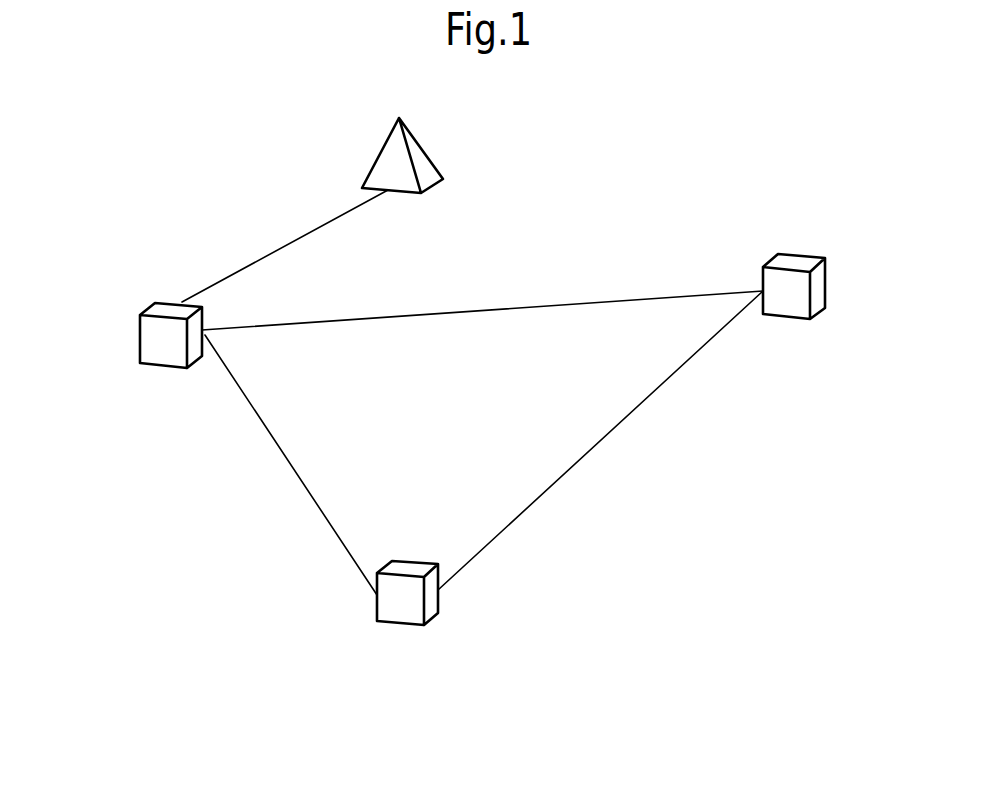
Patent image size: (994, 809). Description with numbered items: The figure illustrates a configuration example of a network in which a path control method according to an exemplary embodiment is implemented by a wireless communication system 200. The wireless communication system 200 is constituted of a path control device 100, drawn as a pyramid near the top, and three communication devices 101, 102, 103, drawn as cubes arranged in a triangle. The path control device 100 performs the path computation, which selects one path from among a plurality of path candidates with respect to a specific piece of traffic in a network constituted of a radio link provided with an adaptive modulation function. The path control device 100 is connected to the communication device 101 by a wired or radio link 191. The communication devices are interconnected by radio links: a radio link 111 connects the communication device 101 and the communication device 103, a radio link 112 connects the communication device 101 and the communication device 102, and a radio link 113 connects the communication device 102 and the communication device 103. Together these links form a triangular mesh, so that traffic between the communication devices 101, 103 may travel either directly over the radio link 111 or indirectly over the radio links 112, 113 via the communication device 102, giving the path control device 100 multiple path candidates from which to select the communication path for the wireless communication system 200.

The path control device 100 is at (425, 150).
The communication device 101 is at (140, 337).
The communication device 102 is at (400, 625).
The communication device 103 is at (825, 287).
The radio link 111 is at (432, 315).
The radio link 112 is at (282, 457).
The radio link 113 is at (590, 457).
The wired or radio link 191 is at (325, 228).
The wireless communication system 200 is at (476, 776).